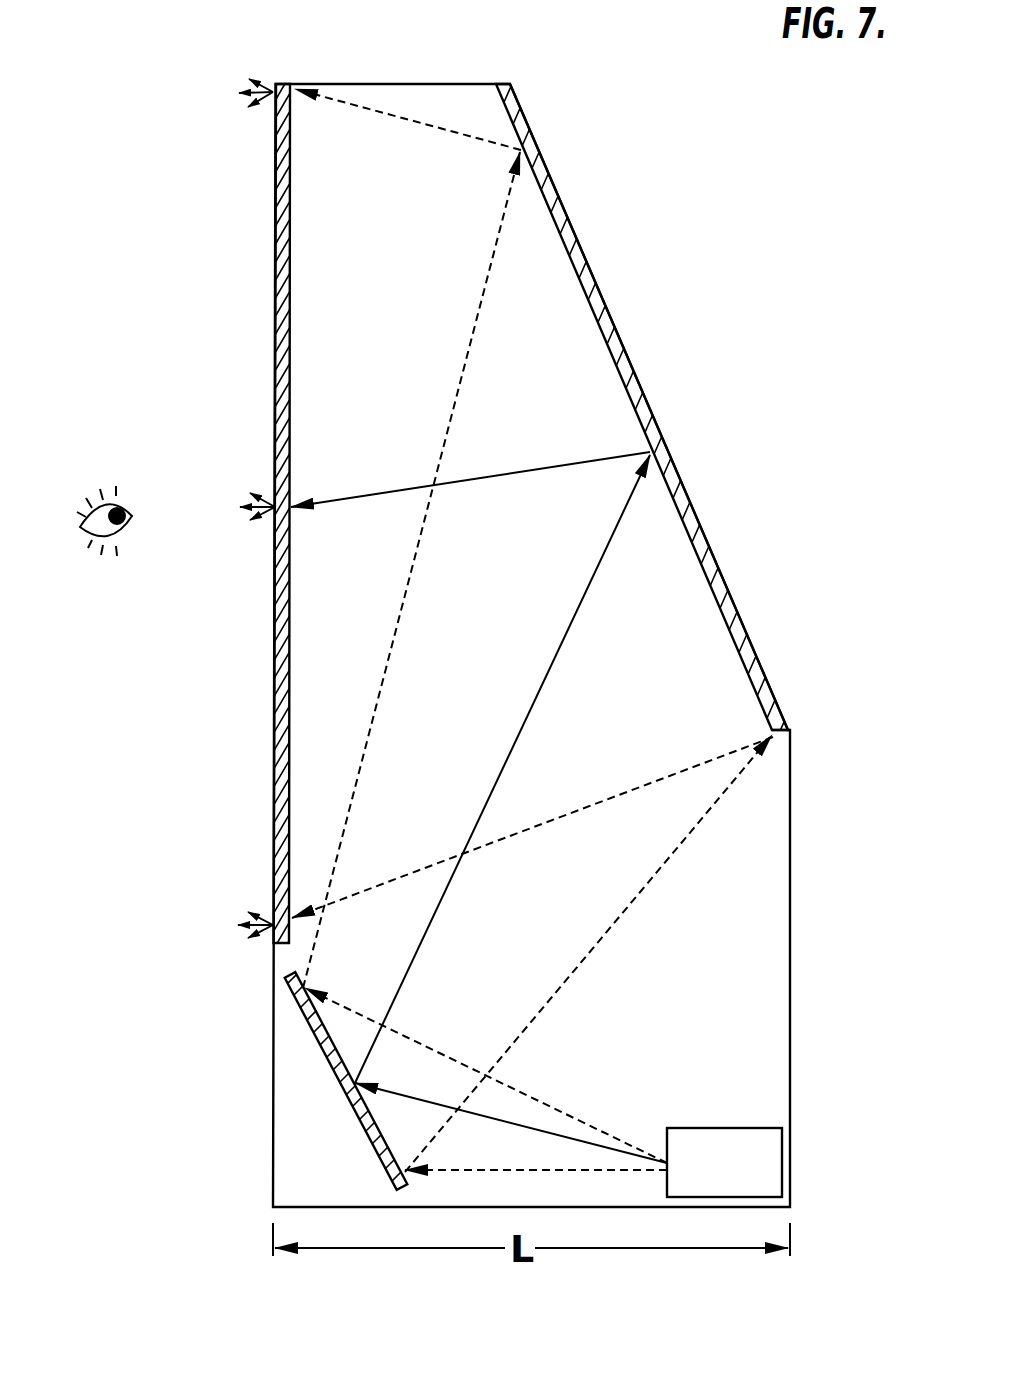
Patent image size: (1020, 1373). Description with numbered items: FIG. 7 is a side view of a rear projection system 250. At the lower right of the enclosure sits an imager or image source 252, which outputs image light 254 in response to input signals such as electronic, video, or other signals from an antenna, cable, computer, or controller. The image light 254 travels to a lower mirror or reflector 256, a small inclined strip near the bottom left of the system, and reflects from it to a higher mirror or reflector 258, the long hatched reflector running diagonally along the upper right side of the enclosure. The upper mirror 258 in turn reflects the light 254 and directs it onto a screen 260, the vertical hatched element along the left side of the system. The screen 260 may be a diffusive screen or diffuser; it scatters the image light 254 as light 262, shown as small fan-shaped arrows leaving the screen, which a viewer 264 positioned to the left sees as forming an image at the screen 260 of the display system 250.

The rear projection system 250 is at (738, 312).
The imager 252 is at (742, 1185).
The image light 254 is at (468, 567).
The lower mirror 256 is at (375, 1148).
The upper mirror 258 is at (741, 662).
The screen 260 is at (276, 328).
The scattered light 262 is at (268, 105).
The viewer 264 is at (113, 493).